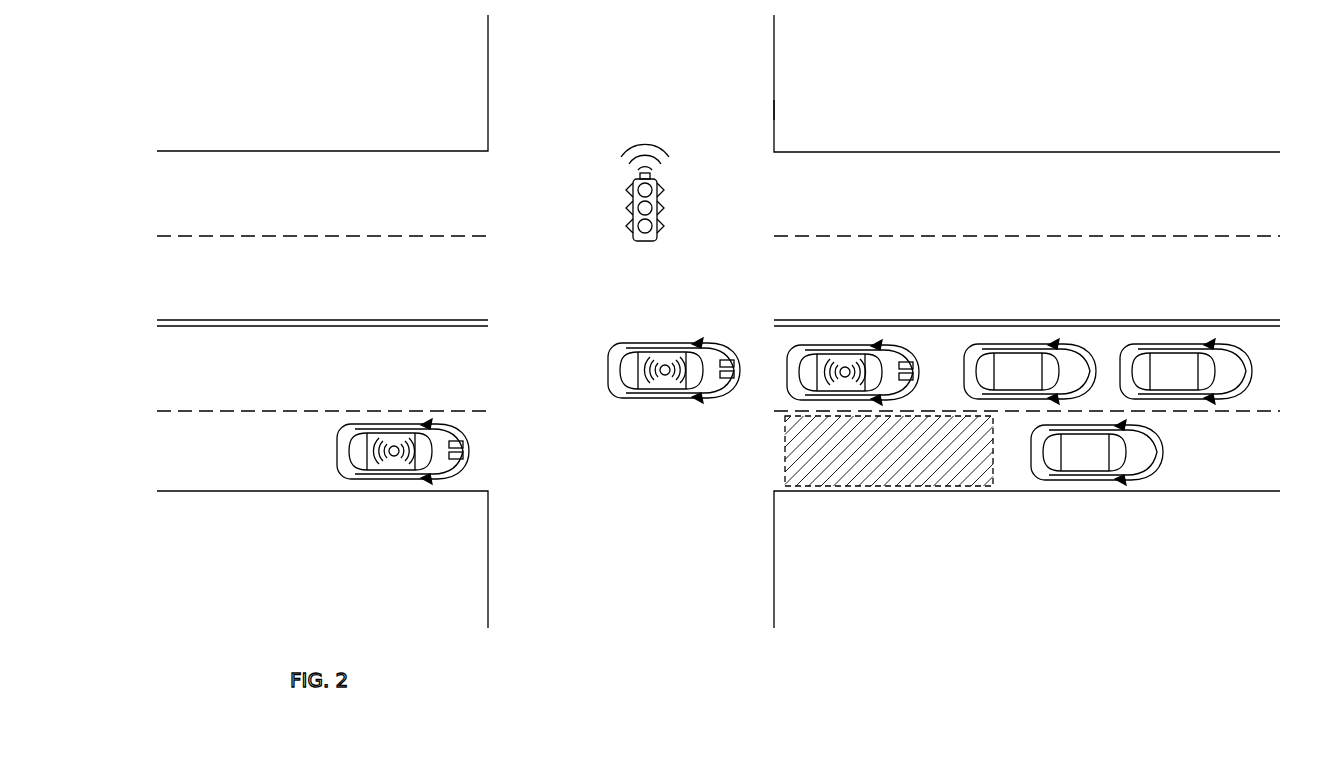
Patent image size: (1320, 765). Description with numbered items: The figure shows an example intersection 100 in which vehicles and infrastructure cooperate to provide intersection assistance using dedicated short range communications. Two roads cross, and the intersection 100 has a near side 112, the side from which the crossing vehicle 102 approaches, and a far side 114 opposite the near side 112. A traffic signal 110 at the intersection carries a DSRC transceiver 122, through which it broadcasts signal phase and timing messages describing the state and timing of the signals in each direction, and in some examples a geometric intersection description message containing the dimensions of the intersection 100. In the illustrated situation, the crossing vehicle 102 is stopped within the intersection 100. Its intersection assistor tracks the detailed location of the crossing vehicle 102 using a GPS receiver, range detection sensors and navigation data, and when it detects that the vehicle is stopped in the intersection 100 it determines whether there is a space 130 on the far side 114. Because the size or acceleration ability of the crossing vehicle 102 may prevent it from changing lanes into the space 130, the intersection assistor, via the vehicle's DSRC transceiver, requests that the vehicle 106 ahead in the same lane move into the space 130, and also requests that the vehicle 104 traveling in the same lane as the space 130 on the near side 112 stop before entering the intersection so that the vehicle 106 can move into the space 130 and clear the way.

The intersection 100 is at (788, 133).
The crossing vehicle 102 is at (674, 374).
The vehicle 104 is at (443, 487).
The vehicle 106 is at (899, 401).
The traffic signal 110 is at (679, 214).
The near side 112 is at (466, 215).
The far side 114 is at (788, 300).
The DSRC transceiver 122 is at (658, 176).
The space 130 is at (888, 488).